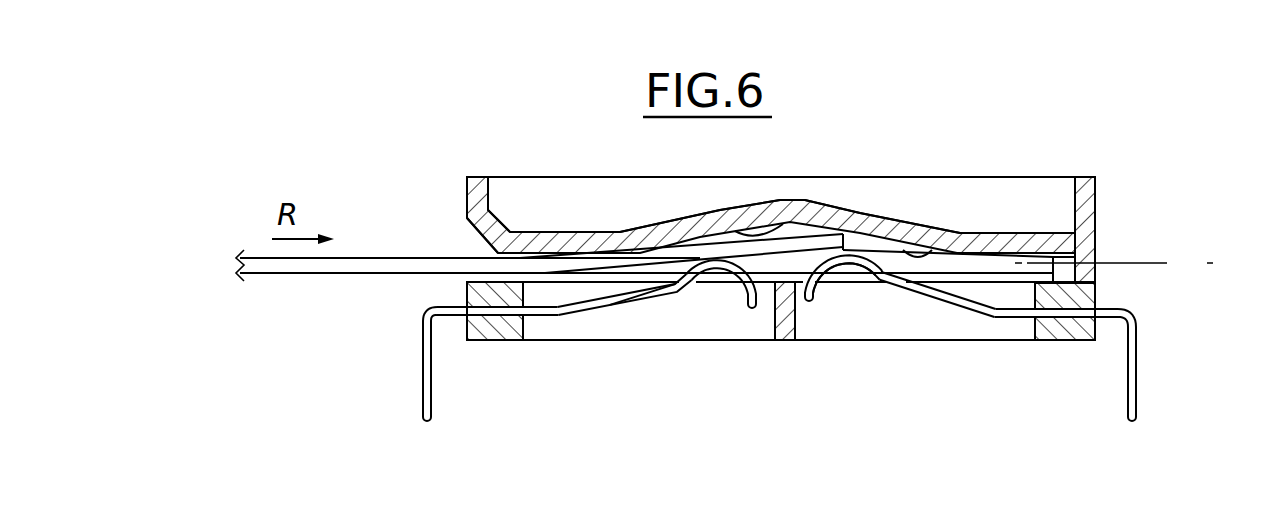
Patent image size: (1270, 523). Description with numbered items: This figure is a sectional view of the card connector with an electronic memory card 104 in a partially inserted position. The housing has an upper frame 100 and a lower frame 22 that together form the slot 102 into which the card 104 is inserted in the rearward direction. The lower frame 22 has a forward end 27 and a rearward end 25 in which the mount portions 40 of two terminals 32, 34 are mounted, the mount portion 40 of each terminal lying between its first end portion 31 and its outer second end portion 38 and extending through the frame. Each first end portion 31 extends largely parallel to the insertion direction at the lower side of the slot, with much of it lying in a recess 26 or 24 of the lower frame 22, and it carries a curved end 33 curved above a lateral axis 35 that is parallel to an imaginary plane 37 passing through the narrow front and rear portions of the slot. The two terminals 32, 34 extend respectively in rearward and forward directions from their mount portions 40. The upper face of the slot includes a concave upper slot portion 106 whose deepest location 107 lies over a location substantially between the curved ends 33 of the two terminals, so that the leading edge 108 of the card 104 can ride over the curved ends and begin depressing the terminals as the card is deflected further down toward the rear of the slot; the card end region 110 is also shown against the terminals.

The upper frame 100 is at (995, 222).
The slot 102 is at (462, 251).
The electronic memory card 104 is at (294, 272).
The concave upper slot portion 106 is at (960, 231).
The deepest location of the concave slot portion 107 is at (736, 228).
The leading edge 108 is at (865, 230).
The card contact pad 110 is at (781, 222).
The imaginary plane 37 is at (1163, 260).
The mount portion 40 is at (1072, 300).
The lower frame 22 is at (1112, 299).
The recess 24 is at (1035, 330).
The rearward end 25 is at (1062, 340).
The recess 26 is at (524, 322).
The forward end 27 is at (491, 340).
The first end portion 31 is at (617, 313).
The terminal 32 is at (935, 310).
The curved end 33 is at (716, 270).
The terminal 34 is at (641, 320).
The axis 35 is at (852, 292).
The second end portion 38 is at (433, 397).